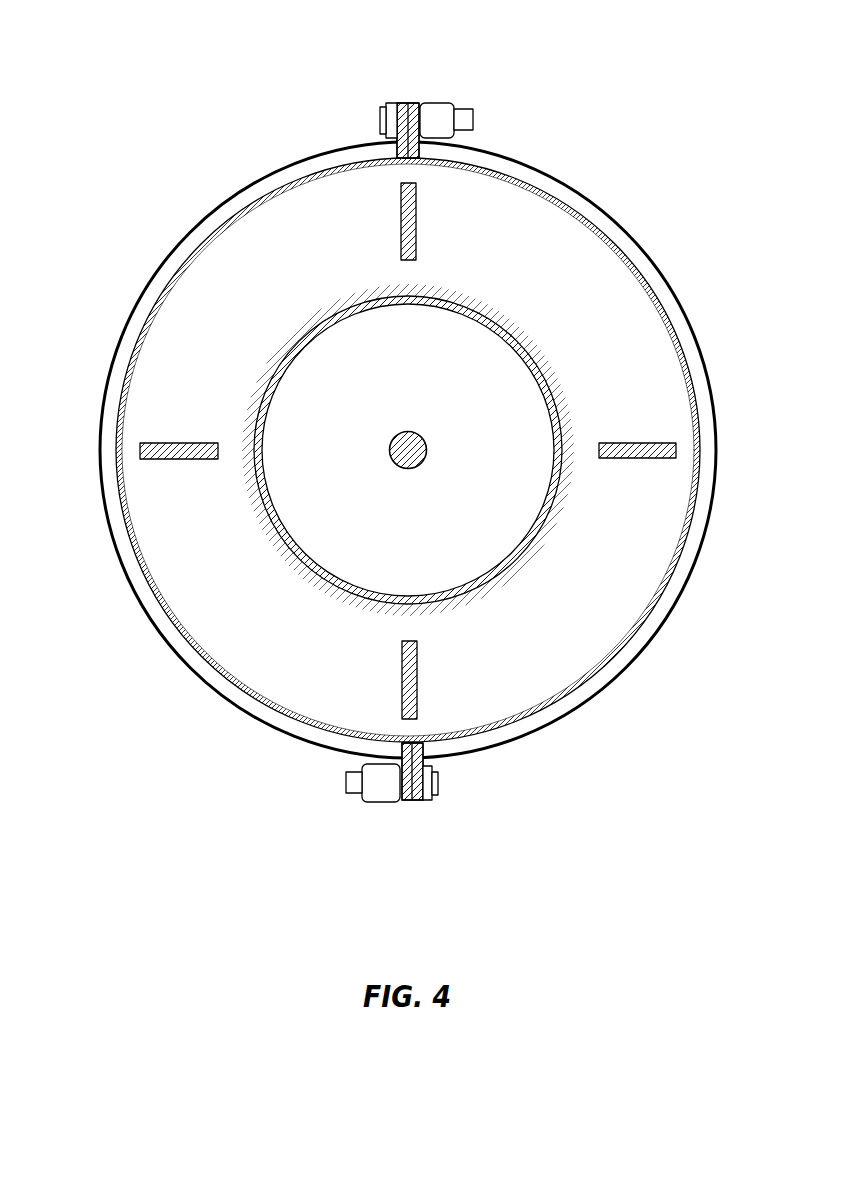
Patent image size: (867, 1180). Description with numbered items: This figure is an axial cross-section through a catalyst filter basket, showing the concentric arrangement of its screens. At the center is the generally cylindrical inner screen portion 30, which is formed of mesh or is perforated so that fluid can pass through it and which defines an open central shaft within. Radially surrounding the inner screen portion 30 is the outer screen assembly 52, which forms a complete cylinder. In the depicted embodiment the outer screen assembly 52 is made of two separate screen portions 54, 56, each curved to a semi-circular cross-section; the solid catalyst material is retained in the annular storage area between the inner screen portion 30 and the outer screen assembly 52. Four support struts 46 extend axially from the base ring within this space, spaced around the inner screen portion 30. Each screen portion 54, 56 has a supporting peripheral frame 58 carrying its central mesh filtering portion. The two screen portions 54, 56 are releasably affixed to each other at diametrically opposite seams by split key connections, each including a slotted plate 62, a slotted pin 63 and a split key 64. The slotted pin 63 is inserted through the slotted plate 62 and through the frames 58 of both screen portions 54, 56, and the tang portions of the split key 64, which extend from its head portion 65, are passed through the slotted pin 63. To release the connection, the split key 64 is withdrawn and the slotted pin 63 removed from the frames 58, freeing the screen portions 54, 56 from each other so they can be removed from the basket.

The inner screen portion 30 is at (533, 368).
The support struts 46 is at (400, 224).
The outer screen assembly 52 is at (642, 236).
The screen portion 54 is at (112, 410).
The screen portion 56 is at (703, 360).
The supporting peripheral frame 58 is at (406, 103).
The slotted plate 62 is at (391, 103).
The slotted pin 63 is at (380, 121).
The split key 64 is at (434, 104).
The head portion 65 is at (444, 106).